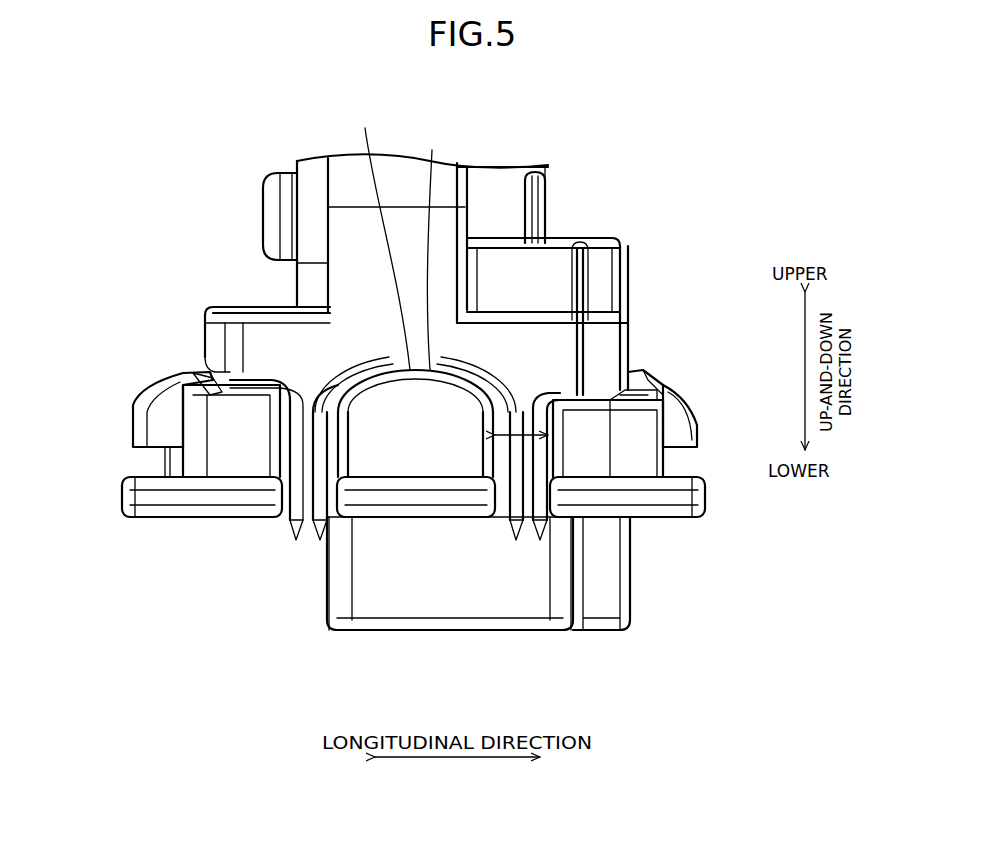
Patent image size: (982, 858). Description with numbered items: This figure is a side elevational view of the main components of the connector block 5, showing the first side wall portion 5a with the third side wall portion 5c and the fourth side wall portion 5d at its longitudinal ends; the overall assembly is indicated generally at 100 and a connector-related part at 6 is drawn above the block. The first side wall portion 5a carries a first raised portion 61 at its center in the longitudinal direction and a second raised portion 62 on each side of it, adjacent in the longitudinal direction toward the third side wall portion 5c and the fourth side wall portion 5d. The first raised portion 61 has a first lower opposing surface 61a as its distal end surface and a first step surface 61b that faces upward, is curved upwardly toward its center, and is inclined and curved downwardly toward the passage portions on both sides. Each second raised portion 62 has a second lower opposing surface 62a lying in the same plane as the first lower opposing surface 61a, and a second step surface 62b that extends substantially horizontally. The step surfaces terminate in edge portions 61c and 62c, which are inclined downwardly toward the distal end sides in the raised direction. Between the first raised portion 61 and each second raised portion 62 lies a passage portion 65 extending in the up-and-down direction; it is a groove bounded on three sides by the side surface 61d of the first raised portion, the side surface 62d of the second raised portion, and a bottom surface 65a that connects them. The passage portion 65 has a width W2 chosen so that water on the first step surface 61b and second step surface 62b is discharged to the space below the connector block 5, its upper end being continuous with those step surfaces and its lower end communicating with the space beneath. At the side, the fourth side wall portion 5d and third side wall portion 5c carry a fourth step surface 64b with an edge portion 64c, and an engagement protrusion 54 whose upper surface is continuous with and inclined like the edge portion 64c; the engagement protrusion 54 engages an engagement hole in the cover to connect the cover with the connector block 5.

The vehicle device / sensor unit 100 is at (190, 130).
The connector portion 6 is at (295, 163).
The connector block 5 is at (248, 298).
The first side wall portion 5a is at (330, 343).
The third side wall portion 5c is at (645, 328).
The fourth side wall portion 5d is at (190, 345).
The engagement protrusion 54 is at (698, 422).
The first raised portion 61 is at (390, 452).
The first lower opposing surface 61a is at (373, 443).
The first step surface 61b is at (379, 237).
The edge portion 61c is at (430, 247).
The side surface of first raised portion 61d is at (329, 520).
The second raised portion 62 is at (236, 450).
The second lower opposing surface 62a is at (243, 460).
The second step surface 62b is at (588, 388).
The edge portion 62c is at (192, 374).
The side surface of second raised portion 62d is at (284, 520).
The fourth step surface 64b is at (645, 372).
The edge portion 64c is at (662, 390).
The passage portion 65 is at (292, 450).
The bottom surface 65a is at (543, 395).
The width of passage portion W2 is at (520, 430).